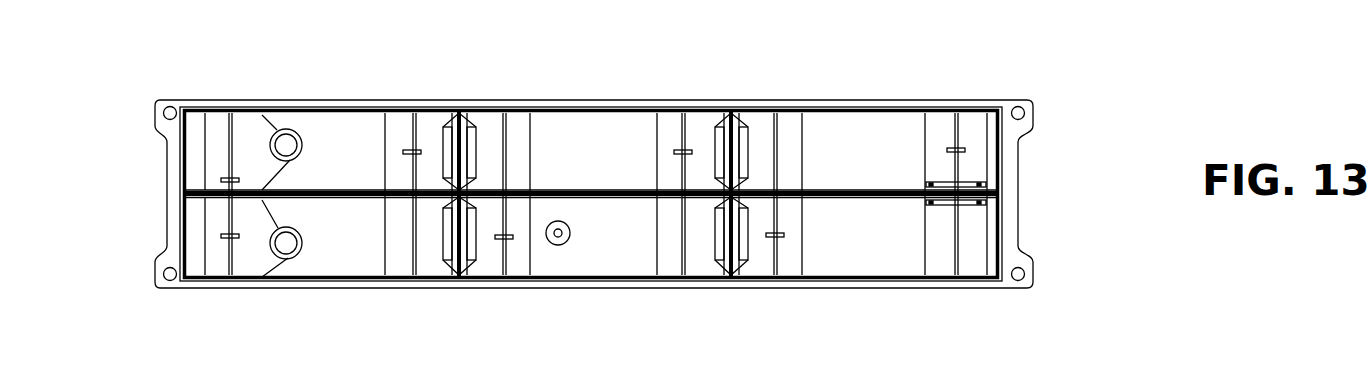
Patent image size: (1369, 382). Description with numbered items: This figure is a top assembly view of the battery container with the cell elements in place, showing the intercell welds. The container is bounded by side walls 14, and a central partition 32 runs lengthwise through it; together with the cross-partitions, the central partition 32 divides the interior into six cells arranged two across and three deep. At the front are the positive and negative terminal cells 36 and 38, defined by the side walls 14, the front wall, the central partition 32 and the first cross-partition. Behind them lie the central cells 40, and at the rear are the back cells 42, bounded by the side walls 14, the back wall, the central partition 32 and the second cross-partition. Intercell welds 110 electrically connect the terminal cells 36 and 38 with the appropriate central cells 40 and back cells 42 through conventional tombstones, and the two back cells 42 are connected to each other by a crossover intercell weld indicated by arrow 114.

The side walls 14 is at (106, 82).
The central partition 32 is at (278, 128).
The front positive terminal cell 36 is at (354, 232).
The front negative terminal cell 38 is at (354, 172).
The central cells 40 is at (610, 167).
The back cells 42 is at (880, 172).
The intercell welds 110 is at (457, 88).
The crossover intercell weld 114 is at (965, 210).